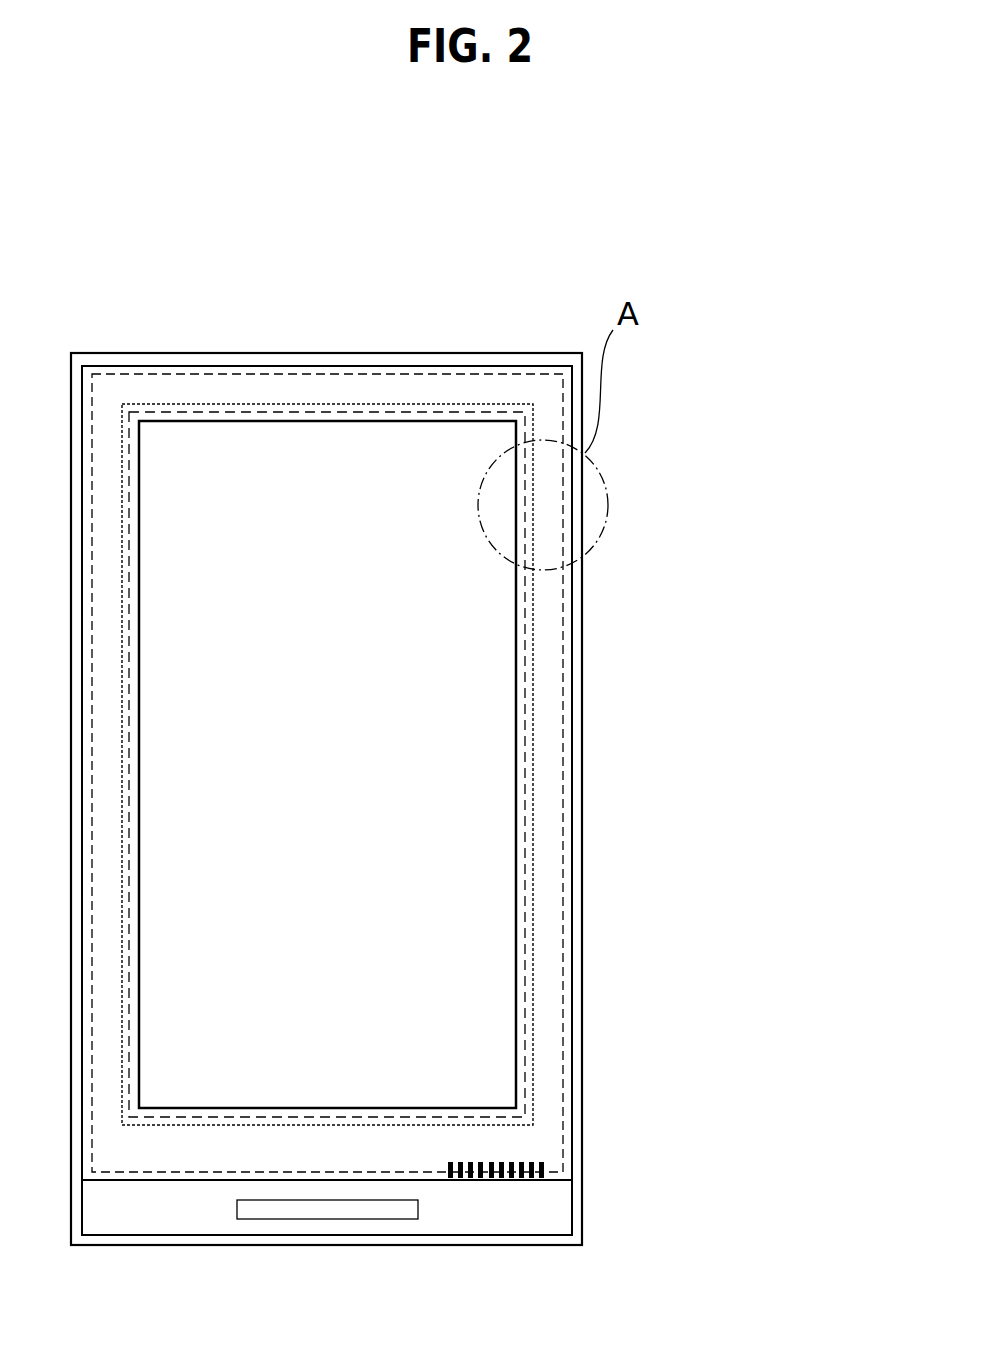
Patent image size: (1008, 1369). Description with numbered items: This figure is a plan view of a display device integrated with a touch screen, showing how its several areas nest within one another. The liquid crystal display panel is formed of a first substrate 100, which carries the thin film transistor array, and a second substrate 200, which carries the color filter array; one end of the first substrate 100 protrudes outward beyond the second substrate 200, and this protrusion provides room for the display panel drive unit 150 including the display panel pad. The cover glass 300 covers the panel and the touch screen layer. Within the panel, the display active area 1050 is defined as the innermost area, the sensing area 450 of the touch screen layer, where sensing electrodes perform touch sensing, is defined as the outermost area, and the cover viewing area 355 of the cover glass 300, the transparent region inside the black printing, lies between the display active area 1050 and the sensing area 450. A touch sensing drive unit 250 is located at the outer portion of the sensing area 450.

The first substrate 100 is at (570, 366).
The second substrate 200 is at (790, 1180).
The cover glass 300 is at (582, 1212).
The sensing area 450 is at (122, 580).
The cover viewing area 355 is at (129, 580).
The display active area 1050 is at (139, 580).
The display panel drive unit 150 is at (343, 1219).
The touch sensing drive unit 250 is at (492, 1178).